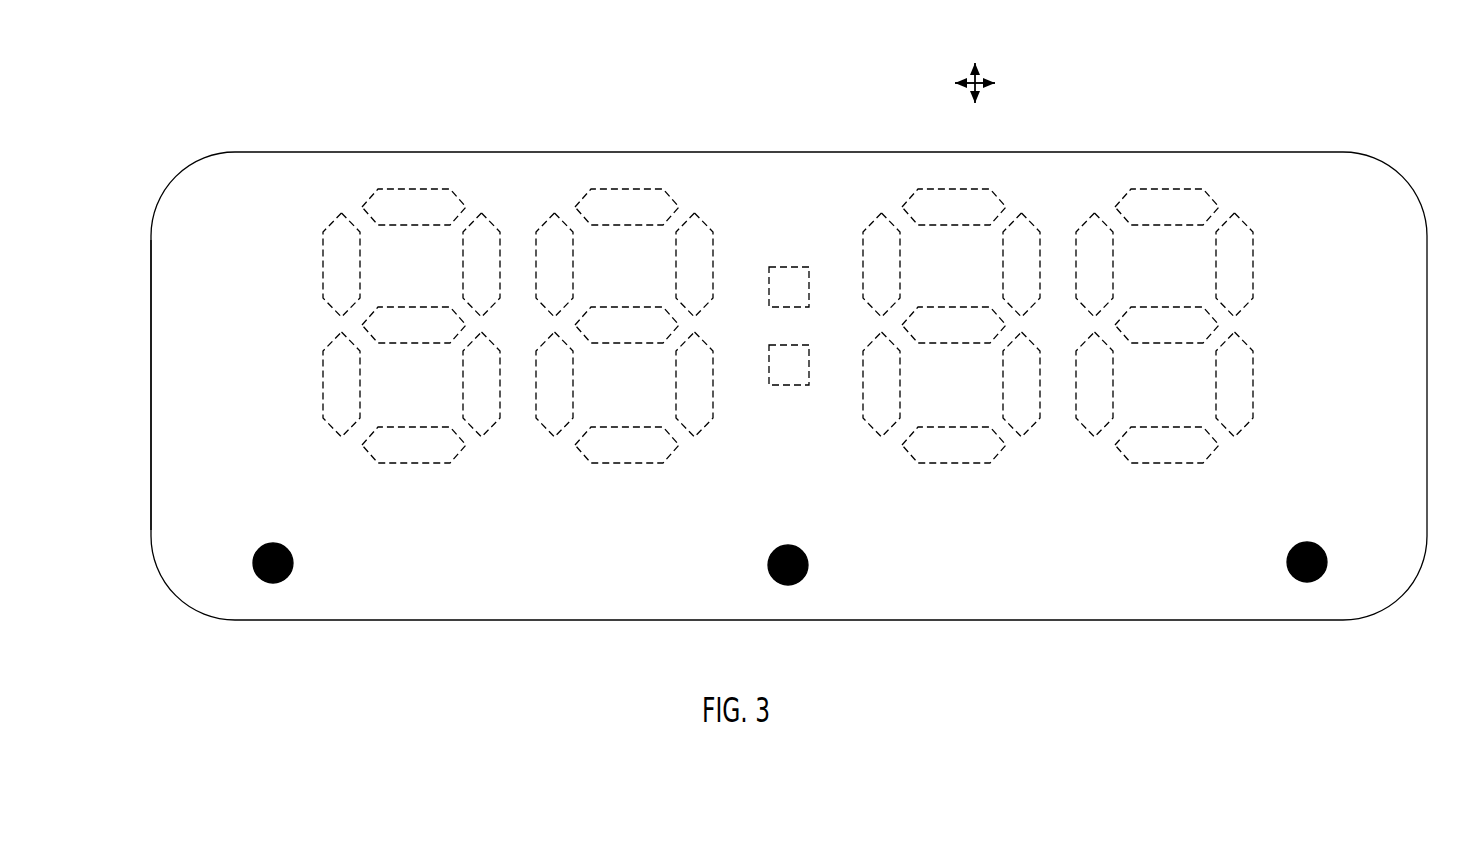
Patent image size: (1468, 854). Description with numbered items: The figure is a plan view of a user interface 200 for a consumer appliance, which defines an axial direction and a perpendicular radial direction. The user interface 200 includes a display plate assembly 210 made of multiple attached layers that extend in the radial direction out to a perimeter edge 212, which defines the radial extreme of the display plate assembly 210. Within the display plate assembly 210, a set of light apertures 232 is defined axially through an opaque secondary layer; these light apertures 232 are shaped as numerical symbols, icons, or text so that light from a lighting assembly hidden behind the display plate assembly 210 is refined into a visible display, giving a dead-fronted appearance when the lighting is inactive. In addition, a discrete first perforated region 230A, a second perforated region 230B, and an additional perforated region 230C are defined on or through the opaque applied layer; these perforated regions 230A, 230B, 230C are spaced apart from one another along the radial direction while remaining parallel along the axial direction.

The user interface 200 is at (1403, 120).
The display plate assembly 210 is at (313, 152).
The perimeter edge 212 is at (151, 523).
The first perforated region 230A is at (273, 588).
The second perforated region 230B is at (800, 587).
The additional perforated region 230C is at (1305, 583).
The light aperture 232 is at (322, 380).